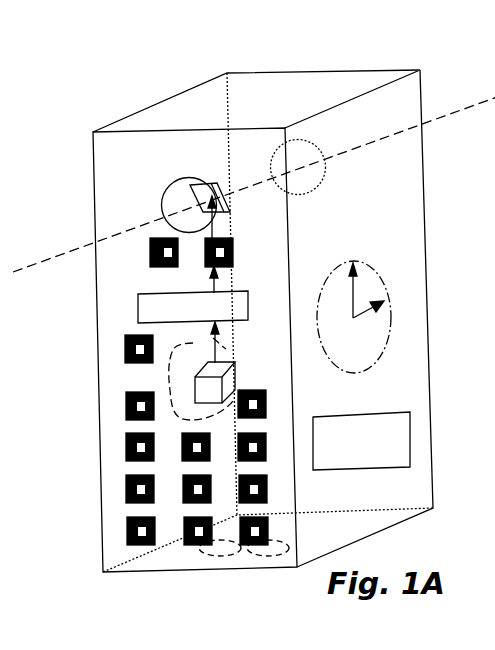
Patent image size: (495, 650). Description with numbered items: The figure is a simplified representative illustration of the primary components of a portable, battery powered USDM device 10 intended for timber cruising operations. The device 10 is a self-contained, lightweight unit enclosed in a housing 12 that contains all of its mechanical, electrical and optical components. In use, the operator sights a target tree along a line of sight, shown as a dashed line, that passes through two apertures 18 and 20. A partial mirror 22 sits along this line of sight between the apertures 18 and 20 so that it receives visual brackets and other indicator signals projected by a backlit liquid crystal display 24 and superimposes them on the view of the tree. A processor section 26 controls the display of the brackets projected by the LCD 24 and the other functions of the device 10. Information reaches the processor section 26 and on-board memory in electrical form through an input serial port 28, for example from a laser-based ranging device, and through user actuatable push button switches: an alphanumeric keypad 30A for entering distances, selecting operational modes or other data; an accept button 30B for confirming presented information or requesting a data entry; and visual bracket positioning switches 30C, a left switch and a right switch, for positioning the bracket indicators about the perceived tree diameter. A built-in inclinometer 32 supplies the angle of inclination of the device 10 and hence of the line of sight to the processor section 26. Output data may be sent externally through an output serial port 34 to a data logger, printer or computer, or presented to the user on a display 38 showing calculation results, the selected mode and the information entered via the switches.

The USDM device 10 is at (53, 583).
The housing 12 is at (420, 70).
The aperture 18 is at (192, 185).
The aperture 20 is at (293, 195).
The partial mirror 22 is at (222, 188).
The backlit liquid crystal display 24 is at (235, 362).
The processor section 26 is at (402, 412).
The input serial port 28 is at (220, 558).
The alphanumeric keypad 30A is at (112, 385).
The accept button 30B is at (125, 348).
The visual bracket positioning switches 30C is at (207, 266).
The inclinometer 32 is at (370, 265).
The output serial port 34 is at (268, 558).
The display 38 is at (220, 293).